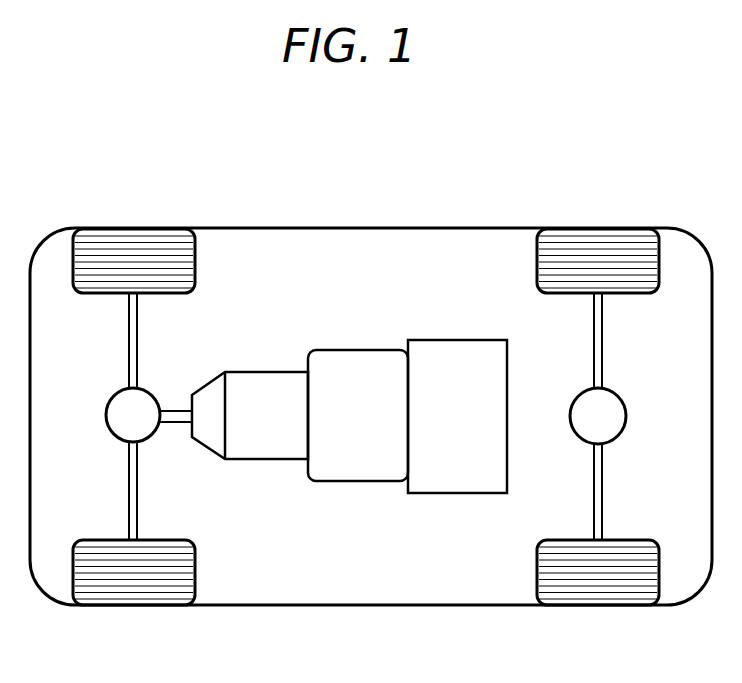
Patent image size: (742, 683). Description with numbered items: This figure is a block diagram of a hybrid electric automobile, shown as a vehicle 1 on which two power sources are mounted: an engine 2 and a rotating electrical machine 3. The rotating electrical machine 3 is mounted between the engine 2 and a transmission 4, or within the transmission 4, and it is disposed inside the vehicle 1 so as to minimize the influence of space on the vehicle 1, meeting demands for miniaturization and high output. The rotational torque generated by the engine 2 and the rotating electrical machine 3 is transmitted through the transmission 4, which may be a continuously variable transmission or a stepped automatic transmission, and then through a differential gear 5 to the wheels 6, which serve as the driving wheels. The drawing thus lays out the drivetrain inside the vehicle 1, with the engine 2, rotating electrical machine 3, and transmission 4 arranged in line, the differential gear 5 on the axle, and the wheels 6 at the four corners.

The vehicle 1 is at (43, 107).
The engine 2 is at (460, 340).
The rotating electrical machine 3 is at (370, 350).
The transmission 4 is at (277, 460).
The differential gear 5 is at (106, 415).
The wheels 6 is at (143, 240).